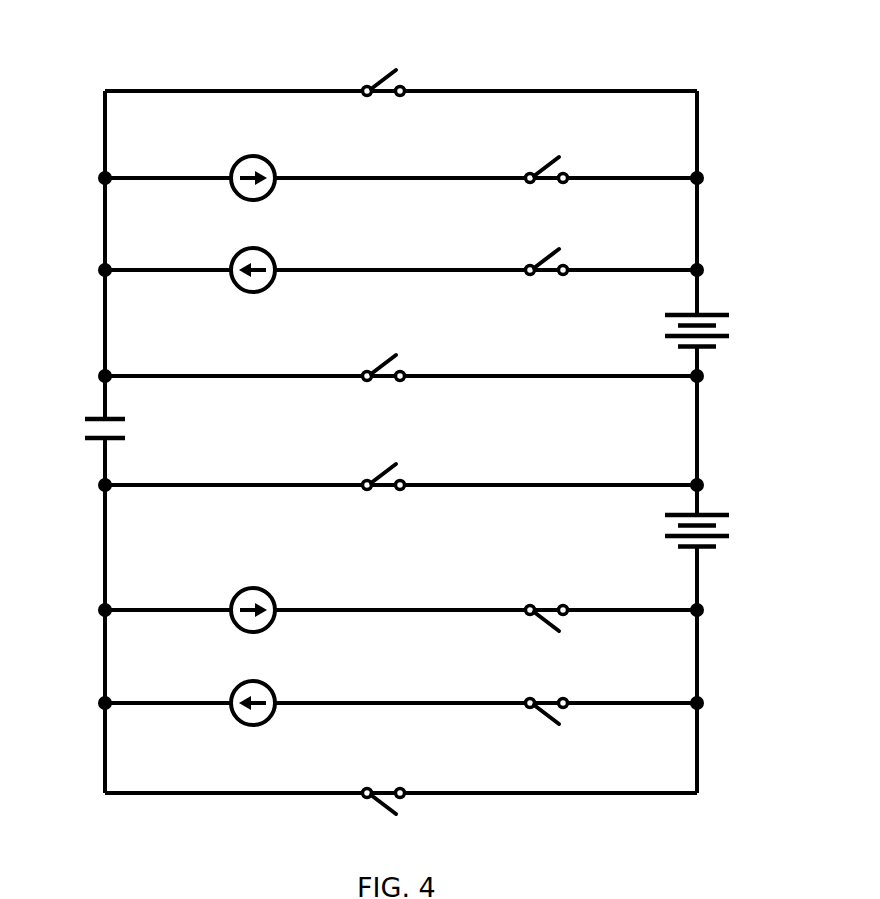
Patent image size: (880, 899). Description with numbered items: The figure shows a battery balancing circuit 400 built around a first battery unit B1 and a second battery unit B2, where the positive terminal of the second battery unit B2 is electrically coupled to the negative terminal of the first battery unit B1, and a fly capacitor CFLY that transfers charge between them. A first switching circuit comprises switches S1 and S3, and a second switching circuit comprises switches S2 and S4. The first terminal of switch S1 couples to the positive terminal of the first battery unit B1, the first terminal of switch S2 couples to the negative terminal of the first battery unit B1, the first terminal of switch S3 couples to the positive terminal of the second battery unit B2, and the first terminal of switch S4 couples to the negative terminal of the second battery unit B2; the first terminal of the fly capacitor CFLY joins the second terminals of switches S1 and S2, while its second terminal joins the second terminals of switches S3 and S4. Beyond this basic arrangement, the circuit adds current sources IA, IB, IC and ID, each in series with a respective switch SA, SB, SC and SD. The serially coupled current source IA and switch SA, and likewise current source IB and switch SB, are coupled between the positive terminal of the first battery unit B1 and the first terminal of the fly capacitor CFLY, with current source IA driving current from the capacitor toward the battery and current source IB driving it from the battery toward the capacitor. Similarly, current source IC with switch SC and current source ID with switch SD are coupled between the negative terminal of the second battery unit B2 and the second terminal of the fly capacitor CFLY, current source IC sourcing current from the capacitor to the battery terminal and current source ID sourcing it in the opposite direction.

The battery balancing circuit 400 is at (88, 88).
The switch S1 is at (383, 105).
The switch S2 is at (383, 390).
The switch S3 is at (383, 499).
The switch S4 is at (382, 781).
The switch SA is at (546, 195).
The switch SB is at (546, 289).
The switch SC is at (546, 593).
The switch SD is at (544, 686).
The current source IA is at (253, 195).
The current source IB is at (253, 287).
The current source IC is at (253, 593).
The current source ID is at (253, 688).
The first battery unit B1 is at (720, 331).
The second battery unit B2 is at (720, 532).
The fly capacitor CFLY is at (71, 430).